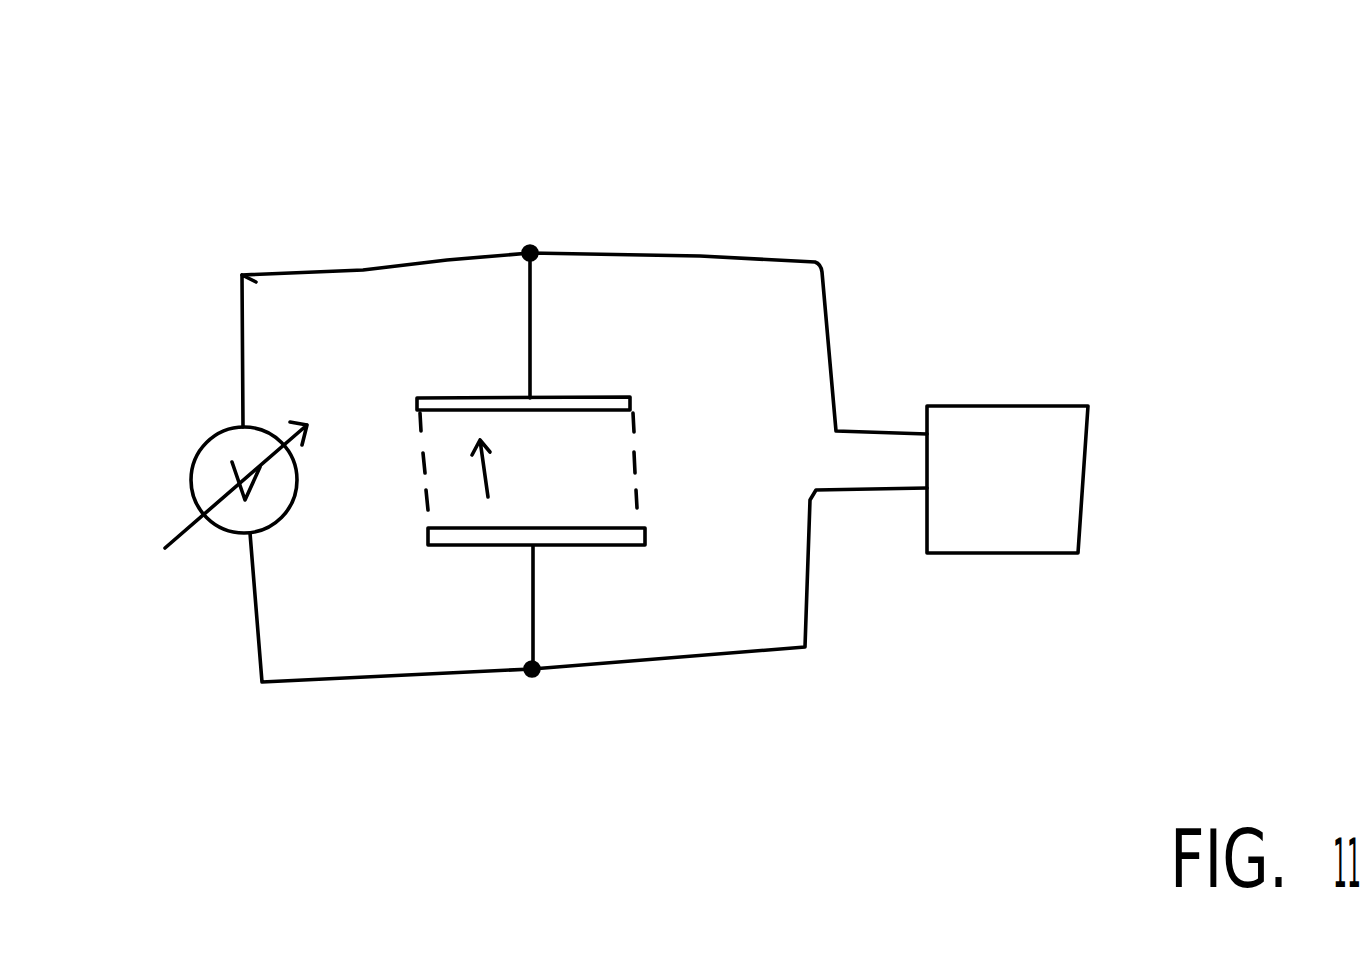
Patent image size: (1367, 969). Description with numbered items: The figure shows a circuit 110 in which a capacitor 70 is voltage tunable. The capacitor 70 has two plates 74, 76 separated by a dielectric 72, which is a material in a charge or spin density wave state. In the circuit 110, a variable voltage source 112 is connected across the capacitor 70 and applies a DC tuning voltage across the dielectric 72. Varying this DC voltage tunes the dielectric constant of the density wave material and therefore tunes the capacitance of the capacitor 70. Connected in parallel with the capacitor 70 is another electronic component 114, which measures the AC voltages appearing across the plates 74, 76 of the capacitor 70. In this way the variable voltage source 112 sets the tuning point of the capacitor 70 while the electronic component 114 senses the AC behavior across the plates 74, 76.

The circuit 110 is at (870, 197).
The variable voltage source 112 is at (198, 448).
The electronic component 114 is at (1042, 500).
The capacitor 70 is at (600, 458).
The dielectric 72 is at (585, 458).
The plate 74 is at (590, 397).
The plate 76 is at (592, 533).